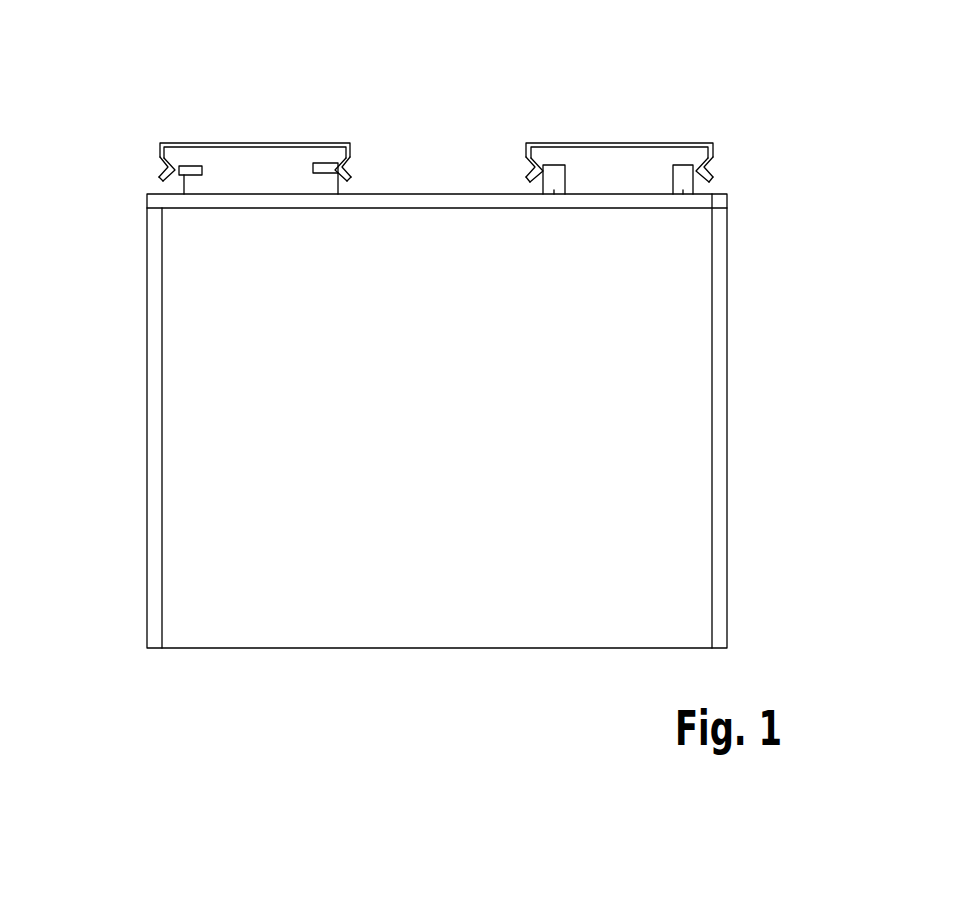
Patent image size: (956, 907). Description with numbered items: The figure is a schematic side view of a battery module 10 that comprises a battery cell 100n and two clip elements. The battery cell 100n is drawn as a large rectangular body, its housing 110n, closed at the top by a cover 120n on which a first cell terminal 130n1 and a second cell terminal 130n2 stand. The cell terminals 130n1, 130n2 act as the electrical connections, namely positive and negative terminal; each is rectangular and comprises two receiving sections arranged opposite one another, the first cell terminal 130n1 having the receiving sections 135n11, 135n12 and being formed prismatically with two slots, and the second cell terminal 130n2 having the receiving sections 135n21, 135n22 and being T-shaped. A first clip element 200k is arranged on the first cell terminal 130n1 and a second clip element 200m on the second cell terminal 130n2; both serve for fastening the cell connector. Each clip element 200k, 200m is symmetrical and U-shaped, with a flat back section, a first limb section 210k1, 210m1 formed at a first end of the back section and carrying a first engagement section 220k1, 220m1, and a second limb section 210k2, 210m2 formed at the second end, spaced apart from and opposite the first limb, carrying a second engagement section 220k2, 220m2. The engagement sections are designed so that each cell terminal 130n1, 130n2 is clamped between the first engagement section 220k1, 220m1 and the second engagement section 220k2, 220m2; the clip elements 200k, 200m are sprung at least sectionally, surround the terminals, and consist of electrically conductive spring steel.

The battery module 10 is at (448, 25).
The battery cell 100n is at (734, 416).
The cell housing 110n is at (413, 423).
The cell cover / lid 120n is at (458, 205).
The first cell terminal 130n1 is at (288, 158).
The second cell terminal 130n2 is at (663, 157).
The receiving section 135n11 is at (183, 177).
The receiving section 135n12 is at (330, 167).
The receiving section 135n21 is at (550, 176).
The receiving section 135n22 is at (690, 176).
The first clip element 200k is at (223, 143).
The second clip element 200m is at (613, 143).
The first limb section 210k1 is at (160, 150).
The second limb section 210k2 is at (349, 158).
The first limb section 210m1 is at (525, 147).
The second limb section 210m2 is at (713, 150).
The first engagement section 220k1 is at (160, 178).
The second engagement section 220k2 is at (352, 173).
The first engagement section 220m1 is at (529, 170).
The second engagement section 220m2 is at (712, 172).